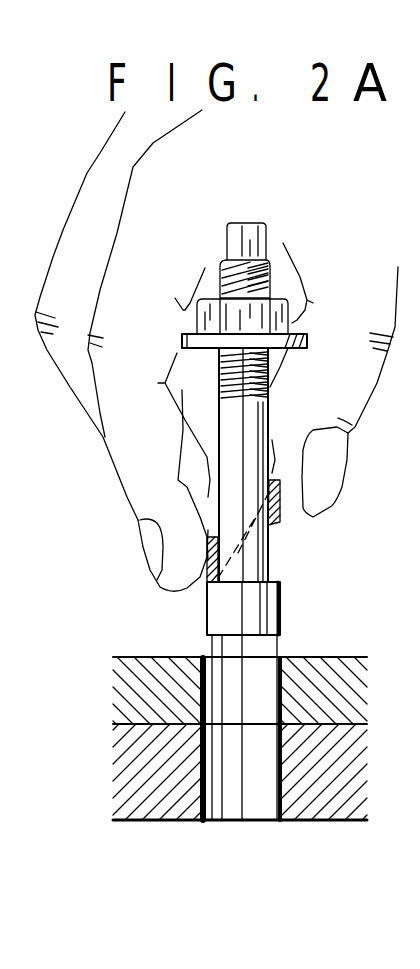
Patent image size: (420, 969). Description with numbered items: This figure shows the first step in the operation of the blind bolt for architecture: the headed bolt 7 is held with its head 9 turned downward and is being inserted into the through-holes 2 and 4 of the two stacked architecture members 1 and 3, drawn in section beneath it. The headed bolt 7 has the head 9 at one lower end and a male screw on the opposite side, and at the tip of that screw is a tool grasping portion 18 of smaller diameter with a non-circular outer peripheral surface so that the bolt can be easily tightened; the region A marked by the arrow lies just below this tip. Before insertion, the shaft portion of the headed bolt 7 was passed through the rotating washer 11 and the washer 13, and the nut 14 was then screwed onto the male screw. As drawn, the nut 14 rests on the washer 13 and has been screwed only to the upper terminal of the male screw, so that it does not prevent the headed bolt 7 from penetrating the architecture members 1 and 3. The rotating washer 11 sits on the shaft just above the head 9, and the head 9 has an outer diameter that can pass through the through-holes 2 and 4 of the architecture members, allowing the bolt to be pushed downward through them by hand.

The tool grasping portion 18 is at (260, 237).
The threaded portion A is at (284, 291).
The nut 14 is at (292, 323).
The washer 13 is at (285, 353).
The rotating washer 11 is at (278, 508).
The headed bolt 7 is at (260, 558).
The head 9 is at (267, 617).
The architecture member 3 is at (135, 677).
The architecture member 1 is at (323, 797).
The through-hole 4 is at (213, 672).
The through-hole 2 is at (212, 820).